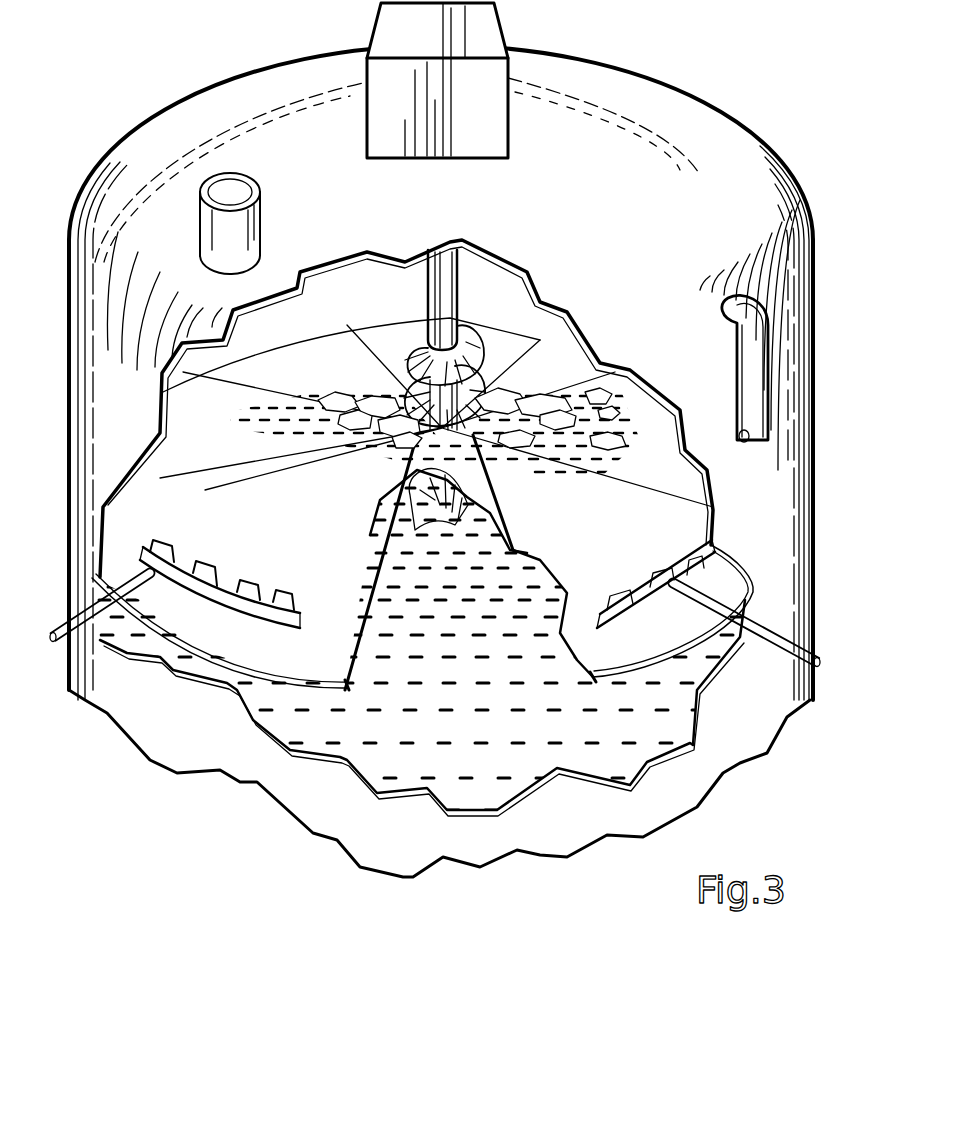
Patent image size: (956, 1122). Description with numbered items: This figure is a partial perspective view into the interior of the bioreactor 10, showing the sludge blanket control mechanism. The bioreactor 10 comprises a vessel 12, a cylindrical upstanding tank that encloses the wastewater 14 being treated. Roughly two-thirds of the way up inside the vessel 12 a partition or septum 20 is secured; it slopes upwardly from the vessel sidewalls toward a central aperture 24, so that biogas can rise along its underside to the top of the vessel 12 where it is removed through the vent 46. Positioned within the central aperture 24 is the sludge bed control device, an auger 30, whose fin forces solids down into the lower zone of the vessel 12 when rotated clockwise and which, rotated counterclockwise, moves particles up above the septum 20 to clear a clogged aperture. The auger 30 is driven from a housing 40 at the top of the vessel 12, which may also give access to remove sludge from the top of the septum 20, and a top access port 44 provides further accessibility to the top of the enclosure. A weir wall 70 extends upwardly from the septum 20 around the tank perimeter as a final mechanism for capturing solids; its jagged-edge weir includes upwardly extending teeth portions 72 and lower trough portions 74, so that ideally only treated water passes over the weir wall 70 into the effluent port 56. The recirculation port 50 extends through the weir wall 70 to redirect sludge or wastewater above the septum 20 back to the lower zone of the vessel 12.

The bioreactor 10 is at (657, 62).
The vessel 12 is at (637, 238).
The wastewater 14 is at (482, 743).
The septum 20 is at (652, 563).
The central aperture 24 is at (488, 364).
The auger 30 is at (465, 300).
The housing 40 is at (428, 45).
The top access port 44 is at (199, 214).
The vent 46 is at (753, 347).
The recirculation port 50 is at (785, 648).
The effluent port 56 is at (108, 655).
The weir wall 70 is at (220, 591).
The teeth portions 72 is at (205, 566).
The trough portions 74 is at (236, 584).